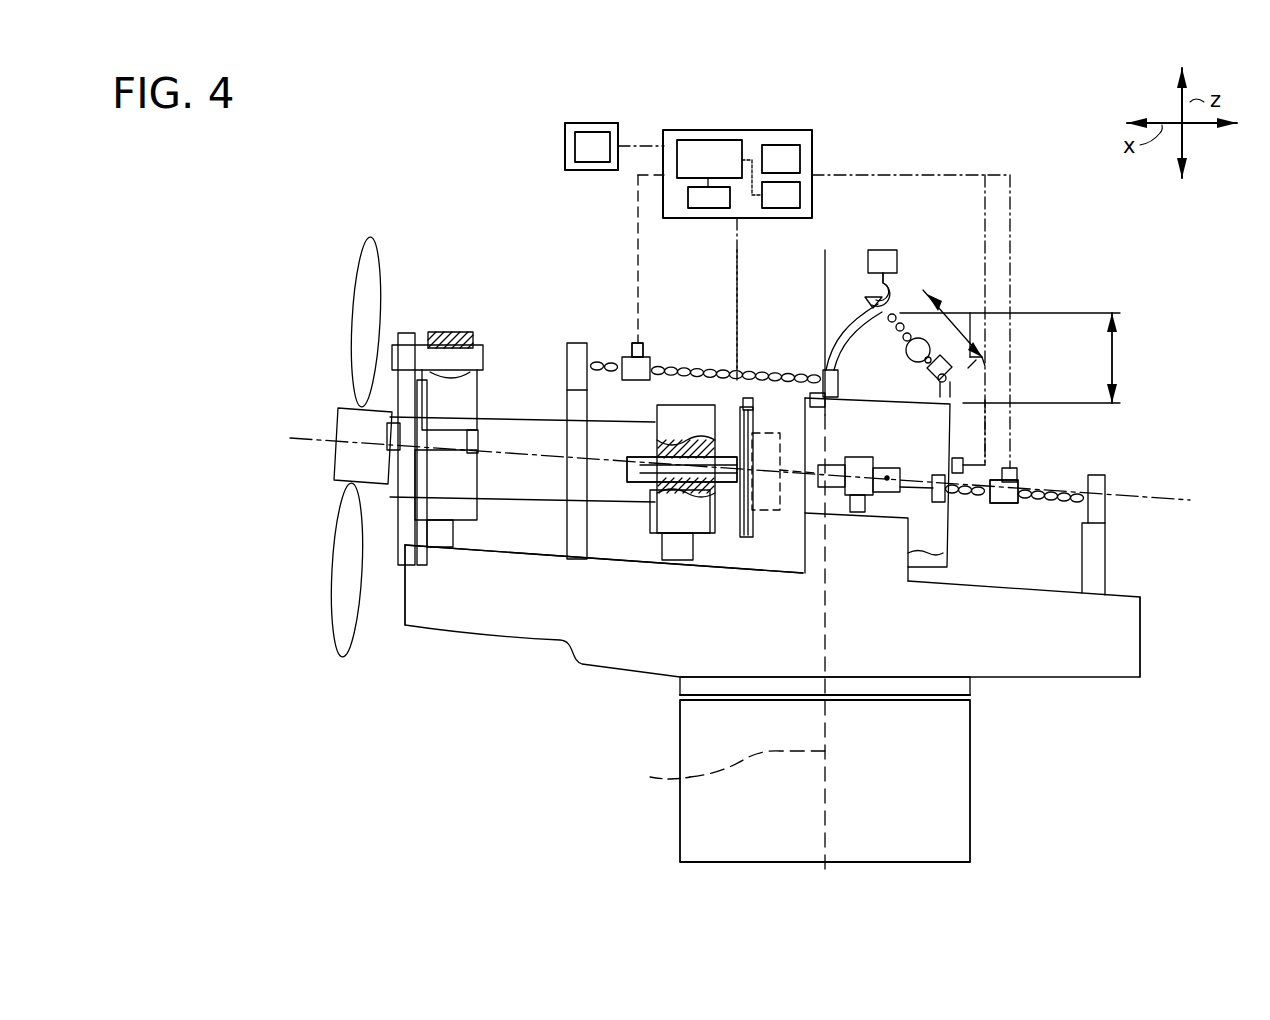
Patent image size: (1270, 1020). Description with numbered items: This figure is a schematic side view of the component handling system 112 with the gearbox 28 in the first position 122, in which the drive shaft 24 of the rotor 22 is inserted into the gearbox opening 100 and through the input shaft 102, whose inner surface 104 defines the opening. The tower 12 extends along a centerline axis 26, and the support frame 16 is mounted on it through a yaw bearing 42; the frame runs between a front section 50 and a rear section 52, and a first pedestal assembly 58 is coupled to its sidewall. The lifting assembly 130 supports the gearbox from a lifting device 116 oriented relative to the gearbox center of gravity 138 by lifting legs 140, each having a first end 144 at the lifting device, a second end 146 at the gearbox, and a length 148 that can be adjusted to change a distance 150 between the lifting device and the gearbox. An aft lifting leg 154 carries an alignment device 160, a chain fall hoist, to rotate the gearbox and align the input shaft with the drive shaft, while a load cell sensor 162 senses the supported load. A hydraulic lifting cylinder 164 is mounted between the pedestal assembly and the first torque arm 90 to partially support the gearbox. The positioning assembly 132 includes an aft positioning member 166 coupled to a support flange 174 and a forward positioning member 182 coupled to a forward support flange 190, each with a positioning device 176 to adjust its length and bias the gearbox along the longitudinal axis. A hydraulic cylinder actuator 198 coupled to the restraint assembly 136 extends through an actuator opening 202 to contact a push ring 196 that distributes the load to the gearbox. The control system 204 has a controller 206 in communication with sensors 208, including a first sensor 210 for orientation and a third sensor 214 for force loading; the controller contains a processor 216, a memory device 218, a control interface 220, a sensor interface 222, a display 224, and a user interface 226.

The tower 12 is at (970, 785).
The support frame 16 is at (630, 661).
The rotor 22 is at (290, 408).
The drive shaft 24 is at (486, 419).
The centerline axis 26 is at (670, 776).
The gearbox 28 is at (843, 390).
The yaw bearing 42 is at (970, 688).
The front section 50 is at (444, 630).
The rear section 52 is at (1115, 666).
The first pedestal assembly 58 is at (943, 553).
The first torque arm 90 is at (854, 460).
The opening 100 is at (745, 513).
The input shaft 102 is at (778, 471).
The inner surface 104 is at (764, 442).
The component handling system 112 is at (558, 235).
The lifting device 116 is at (883, 252).
The first position 122 is at (764, 312).
The lifting assembly 130 is at (1005, 321).
The positioning assembly 132 is at (1086, 444).
The restraint assembly 136 is at (656, 539).
The center of gravity 138 is at (884, 474).
The lifting leg 140 is at (853, 339).
The first end 144 is at (892, 322).
The second end 146 is at (940, 386).
The length 148 is at (965, 322).
The distance 150 is at (1116, 355).
The aft lifting leg 154 is at (903, 340).
The alignment device 160 is at (924, 364).
The load cell sensor 162 is at (955, 365).
The hydraulic lifting cylinder 164 is at (865, 514).
The aft positioning member 166 is at (1048, 503).
The support flange 174 is at (1105, 540).
The positioning device 176 is at (630, 380).
The forward positioning member 182 is at (661, 370).
The forward support flange 190 is at (567, 359).
The push ring 196 is at (745, 415).
The hydraulic cylinder actuator 198 is at (642, 459).
The actuator opening 202 is at (638, 484).
The control system 204 is at (747, 209).
The controller 206 is at (790, 128).
The sensor 208 is at (641, 343).
The first sensor 210 is at (734, 393).
The third sensor 214 is at (1017, 470).
The processor 216 is at (690, 140).
The memory device 218 is at (724, 208).
The control interface 220 is at (804, 160).
The sensor interface 222 is at (794, 208).
The display 224 is at (588, 123).
The user interface 226 is at (565, 146).